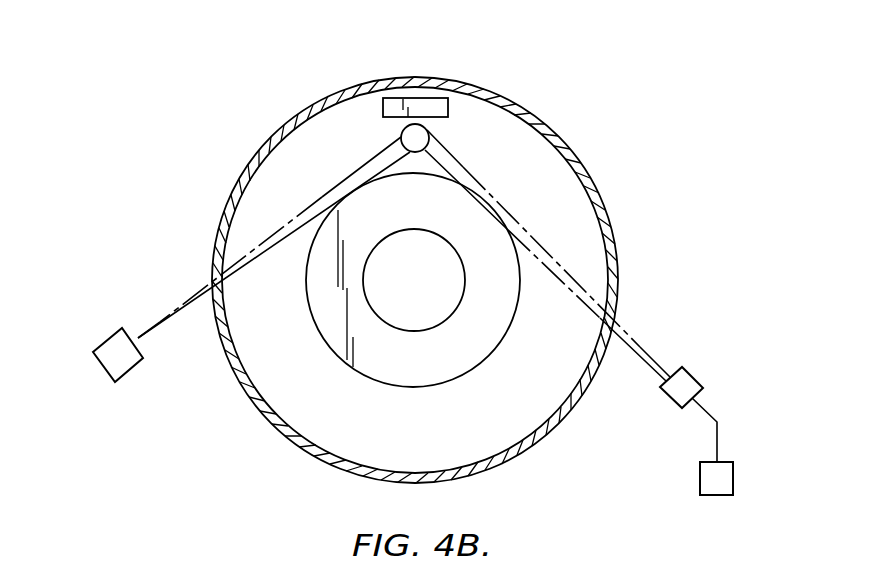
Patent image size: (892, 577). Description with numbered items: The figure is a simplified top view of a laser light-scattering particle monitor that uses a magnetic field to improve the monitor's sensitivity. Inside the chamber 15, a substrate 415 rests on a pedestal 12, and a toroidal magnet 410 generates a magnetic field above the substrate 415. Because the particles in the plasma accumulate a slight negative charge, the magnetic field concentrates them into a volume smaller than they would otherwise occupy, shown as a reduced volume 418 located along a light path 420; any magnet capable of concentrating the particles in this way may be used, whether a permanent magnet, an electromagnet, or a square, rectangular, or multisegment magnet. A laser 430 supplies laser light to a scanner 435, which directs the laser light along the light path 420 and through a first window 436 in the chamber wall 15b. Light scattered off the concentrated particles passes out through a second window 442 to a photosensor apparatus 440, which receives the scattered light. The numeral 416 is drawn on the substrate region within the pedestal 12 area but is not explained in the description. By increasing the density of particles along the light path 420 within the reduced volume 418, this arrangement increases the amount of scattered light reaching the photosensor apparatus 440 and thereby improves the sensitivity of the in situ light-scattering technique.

The chamber 15 is at (580, 124).
The chamber wall 15b is at (598, 188).
The pedestal 12 is at (500, 345).
The substrate 415 is at (432, 296).
The annular region 416 is at (440, 366).
The toroidal magnet 410 is at (448, 100).
The reduced volume 418 is at (431, 134).
The light path 420 is at (174, 308).
The second window 442 is at (211, 273).
The first window 436 is at (620, 308).
The photosensor apparatus 440 is at (104, 341).
The scanner 435 is at (704, 375).
The laser 430 is at (735, 478).